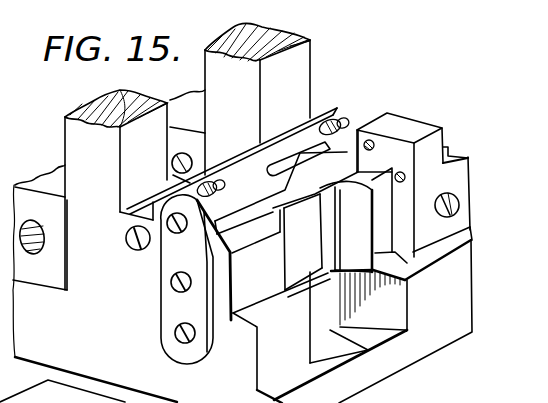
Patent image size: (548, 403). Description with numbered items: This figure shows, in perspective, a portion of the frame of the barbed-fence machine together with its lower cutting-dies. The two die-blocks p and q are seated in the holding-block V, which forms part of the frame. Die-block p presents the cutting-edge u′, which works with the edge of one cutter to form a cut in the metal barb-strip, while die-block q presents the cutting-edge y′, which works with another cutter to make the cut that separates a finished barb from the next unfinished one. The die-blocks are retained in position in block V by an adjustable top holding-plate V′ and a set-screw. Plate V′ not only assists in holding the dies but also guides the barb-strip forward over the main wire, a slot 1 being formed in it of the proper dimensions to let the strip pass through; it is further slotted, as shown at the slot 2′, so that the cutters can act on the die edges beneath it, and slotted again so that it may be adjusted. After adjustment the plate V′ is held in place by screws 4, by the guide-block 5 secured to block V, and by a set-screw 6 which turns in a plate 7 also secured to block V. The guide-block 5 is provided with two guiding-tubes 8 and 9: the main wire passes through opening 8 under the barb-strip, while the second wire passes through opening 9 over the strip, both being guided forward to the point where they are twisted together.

The holding-block V is at (66, 259).
The adjustable top holding-plate V′ is at (237, 171).
The slot 1 is at (298, 166).
The pin 2′ is at (259, 174).
The screws 4 is at (272, 161).
The guide-block 5 is at (400, 185).
The set-screw 6 is at (187, 279).
The plate 7 is at (186, 322).
The guiding-tube 8 is at (405, 177).
The guiding-tube 9 is at (374, 147).
The die-block p is at (303, 242).
The die-block q is at (389, 215).
The cutting-edge u′ is at (295, 191).
The cutting-edge y′ is at (346, 226).